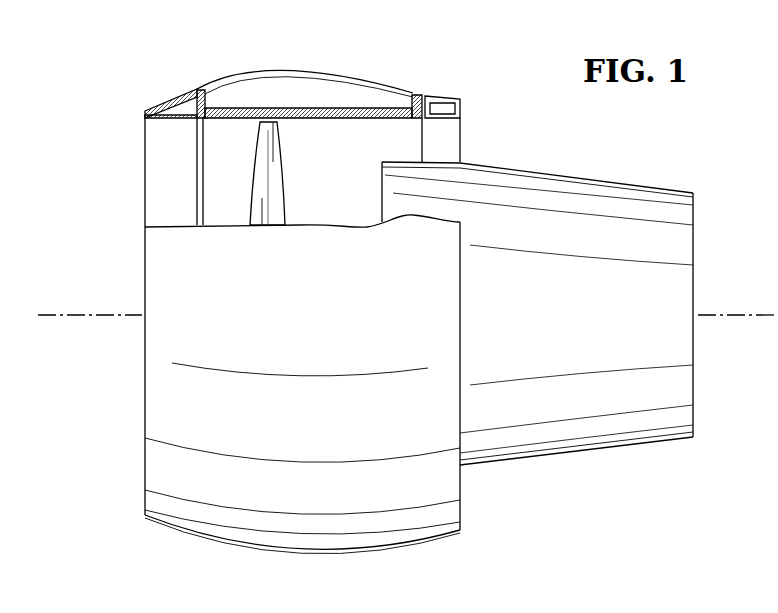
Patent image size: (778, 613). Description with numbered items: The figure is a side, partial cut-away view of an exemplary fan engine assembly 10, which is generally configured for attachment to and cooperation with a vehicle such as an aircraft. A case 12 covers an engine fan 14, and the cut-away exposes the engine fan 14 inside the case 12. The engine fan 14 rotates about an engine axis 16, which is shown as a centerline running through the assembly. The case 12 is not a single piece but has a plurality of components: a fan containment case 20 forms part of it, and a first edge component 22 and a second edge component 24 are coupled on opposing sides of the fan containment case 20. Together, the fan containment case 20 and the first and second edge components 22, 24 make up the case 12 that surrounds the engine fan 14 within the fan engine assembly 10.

The fan engine assembly 10 is at (497, 89).
The case 12 is at (460, 533).
The engine fan 14 is at (284, 181).
The engine axis 16 is at (53, 315).
The fan containment case 20 is at (246, 108).
The first edge component 22 is at (183, 100).
The second edge component 24 is at (436, 96).